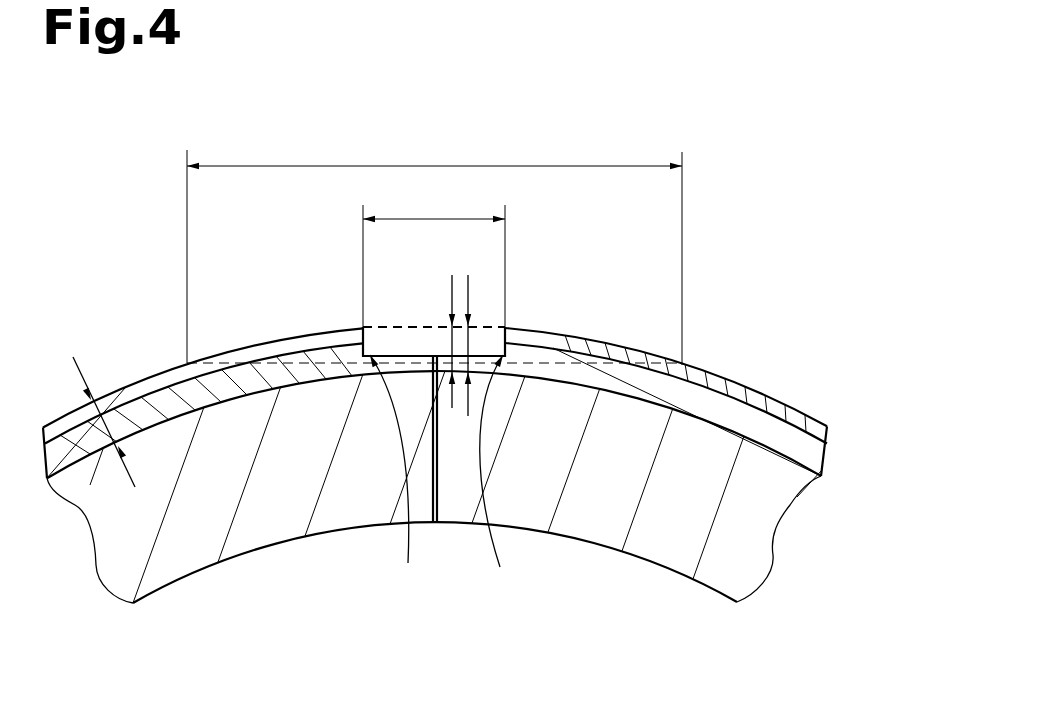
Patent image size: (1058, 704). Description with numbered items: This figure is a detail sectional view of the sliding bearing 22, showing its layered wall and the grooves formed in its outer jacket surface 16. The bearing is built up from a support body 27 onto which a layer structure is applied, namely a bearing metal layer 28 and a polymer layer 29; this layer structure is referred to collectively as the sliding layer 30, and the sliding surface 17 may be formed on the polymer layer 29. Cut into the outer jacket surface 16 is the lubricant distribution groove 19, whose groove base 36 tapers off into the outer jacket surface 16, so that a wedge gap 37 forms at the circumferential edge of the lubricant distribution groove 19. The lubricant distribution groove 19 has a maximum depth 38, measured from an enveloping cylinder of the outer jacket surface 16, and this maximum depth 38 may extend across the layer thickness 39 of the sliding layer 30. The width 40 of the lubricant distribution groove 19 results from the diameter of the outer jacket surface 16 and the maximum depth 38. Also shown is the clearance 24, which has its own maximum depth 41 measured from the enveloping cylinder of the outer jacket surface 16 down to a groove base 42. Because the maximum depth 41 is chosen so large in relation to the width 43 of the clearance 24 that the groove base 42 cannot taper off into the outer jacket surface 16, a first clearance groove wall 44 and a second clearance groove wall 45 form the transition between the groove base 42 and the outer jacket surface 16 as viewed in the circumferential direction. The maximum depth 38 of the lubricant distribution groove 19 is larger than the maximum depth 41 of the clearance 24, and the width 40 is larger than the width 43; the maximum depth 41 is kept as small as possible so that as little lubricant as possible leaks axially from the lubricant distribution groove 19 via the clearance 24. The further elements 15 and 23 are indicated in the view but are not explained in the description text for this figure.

The bearing ring body 15 is at (703, 590).
The outer jacket surface 16 is at (733, 382).
The sliding surface 17 is at (800, 410).
The lubricant distribution groove 19 is at (612, 312).
The sliding bearing 22 is at (783, 95).
The sensor pin 23 is at (443, 527).
The clearance 24 is at (478, 325).
The support body 27 is at (662, 537).
The bearing metal layer 28 is at (823, 470).
The polymer layer 29 is at (830, 437).
The sliding layer 30 is at (838, 472).
The groove base 36 is at (553, 348).
The wedge gap 37 is at (225, 352).
The maximum depth 38 is at (468, 347).
The layer thickness 39 is at (80, 370).
The width 40 is at (557, 163).
The maximum depth 41 is at (450, 347).
The groove base 42 is at (405, 352).
The width 43 is at (437, 217).
The first clearance groove wall 44 is at (394, 482).
The second clearance groove wall 45 is at (501, 483).